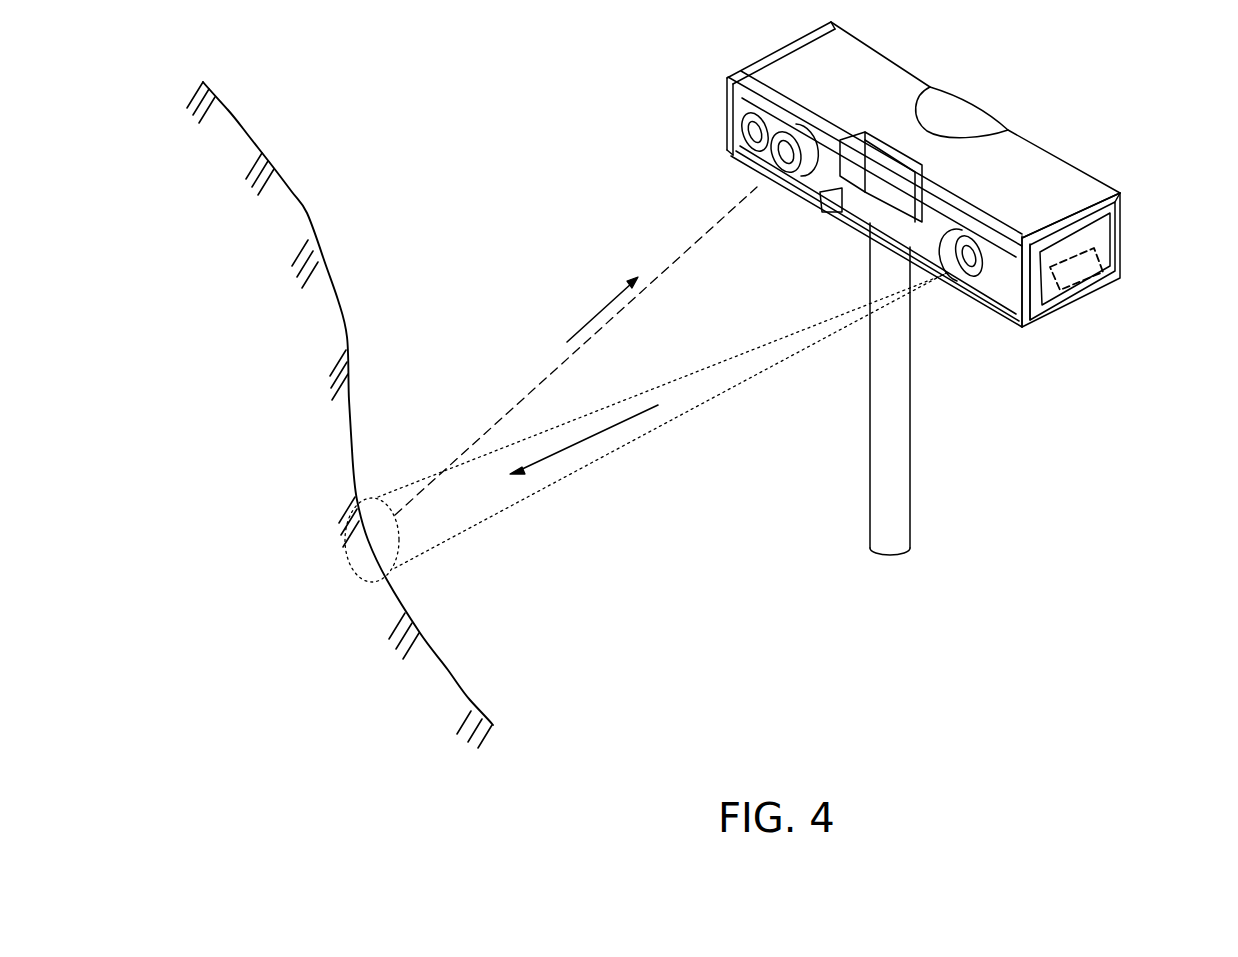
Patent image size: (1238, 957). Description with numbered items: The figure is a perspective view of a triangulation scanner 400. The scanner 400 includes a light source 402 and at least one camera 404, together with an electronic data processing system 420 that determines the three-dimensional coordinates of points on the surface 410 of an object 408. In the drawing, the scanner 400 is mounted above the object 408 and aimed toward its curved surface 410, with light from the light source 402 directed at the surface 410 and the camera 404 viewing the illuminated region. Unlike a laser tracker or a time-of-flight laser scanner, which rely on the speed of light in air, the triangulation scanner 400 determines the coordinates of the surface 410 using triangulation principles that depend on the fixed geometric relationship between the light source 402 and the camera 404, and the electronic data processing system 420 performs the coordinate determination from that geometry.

The triangulation scanner 400 is at (994, 44).
The light source 402 is at (972, 256).
The camera 404 is at (791, 147).
The object 408 is at (227, 511).
The surface 410 is at (306, 214).
The electronic data processing system 420 is at (1100, 251).